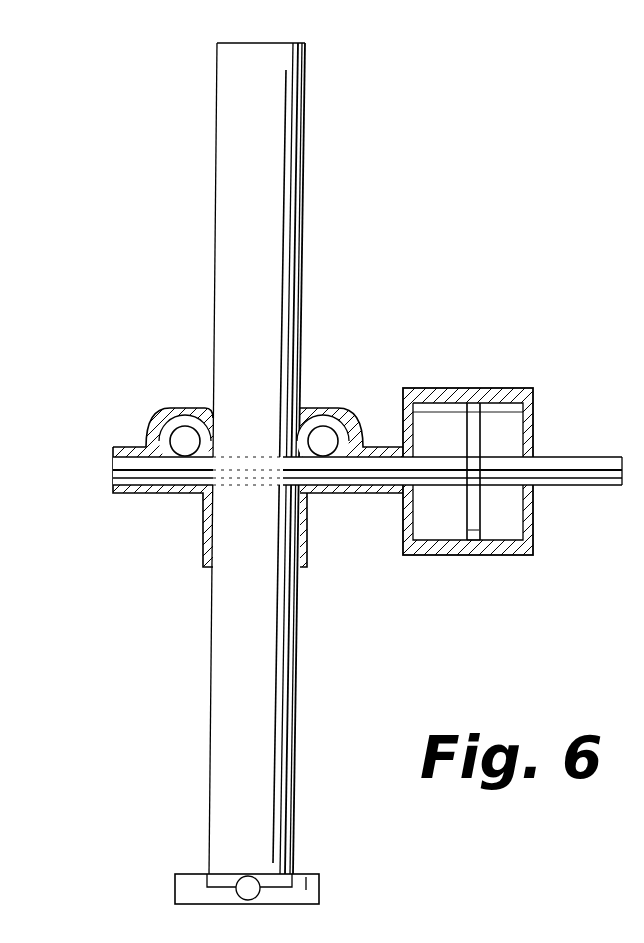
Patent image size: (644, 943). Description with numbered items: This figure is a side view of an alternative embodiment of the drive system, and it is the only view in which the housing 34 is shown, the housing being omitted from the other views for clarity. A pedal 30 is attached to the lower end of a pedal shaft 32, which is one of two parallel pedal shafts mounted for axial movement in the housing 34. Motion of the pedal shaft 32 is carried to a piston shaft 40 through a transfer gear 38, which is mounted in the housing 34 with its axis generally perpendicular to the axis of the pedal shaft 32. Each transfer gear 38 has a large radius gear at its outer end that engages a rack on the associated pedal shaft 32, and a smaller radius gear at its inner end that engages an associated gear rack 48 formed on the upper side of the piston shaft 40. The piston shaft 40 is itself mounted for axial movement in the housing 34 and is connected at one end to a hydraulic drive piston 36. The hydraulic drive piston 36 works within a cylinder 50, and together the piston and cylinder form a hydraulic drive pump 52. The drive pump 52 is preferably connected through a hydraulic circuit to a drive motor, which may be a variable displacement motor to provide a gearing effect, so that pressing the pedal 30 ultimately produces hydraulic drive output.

The pedal 30 is at (306, 890).
The pedal shaft 32 is at (253, 702).
The housing 34 is at (202, 543).
The hydraulic drive piston 36 is at (472, 400).
The transfer gear 38 is at (167, 432).
The piston shaft 40 is at (120, 475).
The gear rack 48 is at (358, 440).
The cylinder 50 is at (503, 550).
The hydraulic drive pump 52 is at (527, 347).